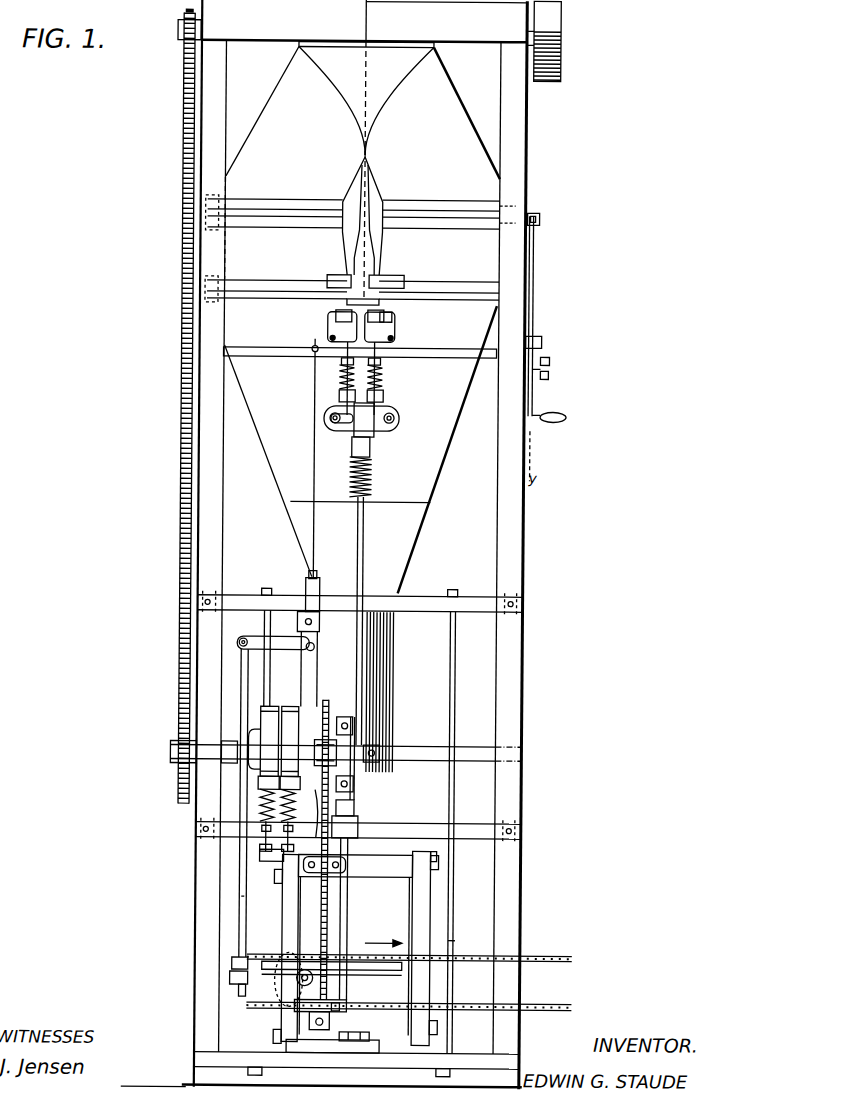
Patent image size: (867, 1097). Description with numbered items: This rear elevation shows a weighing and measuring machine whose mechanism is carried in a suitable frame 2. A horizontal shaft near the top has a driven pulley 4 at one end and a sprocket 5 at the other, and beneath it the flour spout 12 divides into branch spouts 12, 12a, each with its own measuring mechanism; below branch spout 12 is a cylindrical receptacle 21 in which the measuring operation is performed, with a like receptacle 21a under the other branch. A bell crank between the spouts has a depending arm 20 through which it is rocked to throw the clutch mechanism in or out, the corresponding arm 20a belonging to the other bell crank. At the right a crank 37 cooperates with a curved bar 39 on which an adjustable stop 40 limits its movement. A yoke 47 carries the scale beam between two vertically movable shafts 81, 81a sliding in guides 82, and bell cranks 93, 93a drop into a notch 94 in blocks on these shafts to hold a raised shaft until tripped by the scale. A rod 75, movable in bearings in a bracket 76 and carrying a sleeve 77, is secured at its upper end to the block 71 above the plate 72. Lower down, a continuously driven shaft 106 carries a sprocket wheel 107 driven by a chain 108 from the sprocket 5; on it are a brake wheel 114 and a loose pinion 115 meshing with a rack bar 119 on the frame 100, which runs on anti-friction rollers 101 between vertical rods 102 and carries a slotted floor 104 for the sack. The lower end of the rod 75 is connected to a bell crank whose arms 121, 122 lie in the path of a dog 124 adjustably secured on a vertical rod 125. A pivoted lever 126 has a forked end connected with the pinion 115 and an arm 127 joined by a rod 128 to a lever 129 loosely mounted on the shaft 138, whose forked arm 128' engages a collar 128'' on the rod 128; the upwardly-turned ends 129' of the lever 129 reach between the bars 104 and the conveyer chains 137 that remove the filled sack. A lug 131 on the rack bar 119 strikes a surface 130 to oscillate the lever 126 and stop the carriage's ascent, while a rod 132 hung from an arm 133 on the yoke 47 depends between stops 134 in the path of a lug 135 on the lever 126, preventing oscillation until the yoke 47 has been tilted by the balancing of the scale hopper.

The frame 2 is at (518, 120).
The driven pulley 4 is at (558, 41).
The sprocket 5 is at (176, 33).
The flour spout 12 is at (442, 98).
The branch spout 12a is at (290, 97).
The depending arm 20 is at (378, 256).
The nozzle finger 20a is at (358, 250).
The cylindrical receptacle 21 is at (431, 253).
The cross bar 21a is at (278, 249).
The crank 37 is at (533, 284).
The curved bar 39 is at (548, 367).
The adjustable stop 40 is at (546, 380).
The yoke 47 is at (443, 350).
The block 71 is at (388, 432).
The plate 72 is at (395, 419).
The rod 75 is at (363, 548).
The bracket 76 is at (372, 482).
The sleeve 77 is at (352, 446).
The vertically movable shaft 81 is at (385, 400).
The vertically movable shaft 81a is at (337, 400).
The guides 82 is at (385, 372).
The bell crank 93 is at (395, 327).
The clamp 93a is at (335, 330).
The notch 94 is at (385, 320).
The frame 100 is at (348, 951).
The anti-friction rollers 101 is at (458, 870).
The rods 102 is at (454, 660).
The slotted floor 104 is at (366, 986).
The continuously driven shaft 106 is at (413, 748).
The sprocket wheel 107 is at (172, 752).
The chain 108 is at (184, 178).
The brake wheel 114 is at (270, 712).
The pinion 115 is at (330, 738).
The rack bar 119 is at (330, 925).
The arm 121 is at (354, 733).
The arm 122 is at (360, 784).
The dog 124 is at (357, 808).
The vertical rod 125 is at (350, 908).
The pivoted lever 126 is at (306, 665).
The arm 127 is at (275, 646).
The rod 128 is at (191, 909).
The forked arm 128' is at (157, 984).
The collar 128'' is at (192, 963).
The lever 129 is at (191, 999).
The upwardly-turned ends 129' is at (464, 912).
The surface 130 is at (295, 623).
The lug 131 is at (306, 813).
The rod 132 is at (313, 412).
The arm 133 is at (310, 347).
The stops 134 is at (322, 592).
The lug 135 is at (306, 592).
The conveyer chains 137 is at (535, 952).
The shaft 138 is at (310, 849).